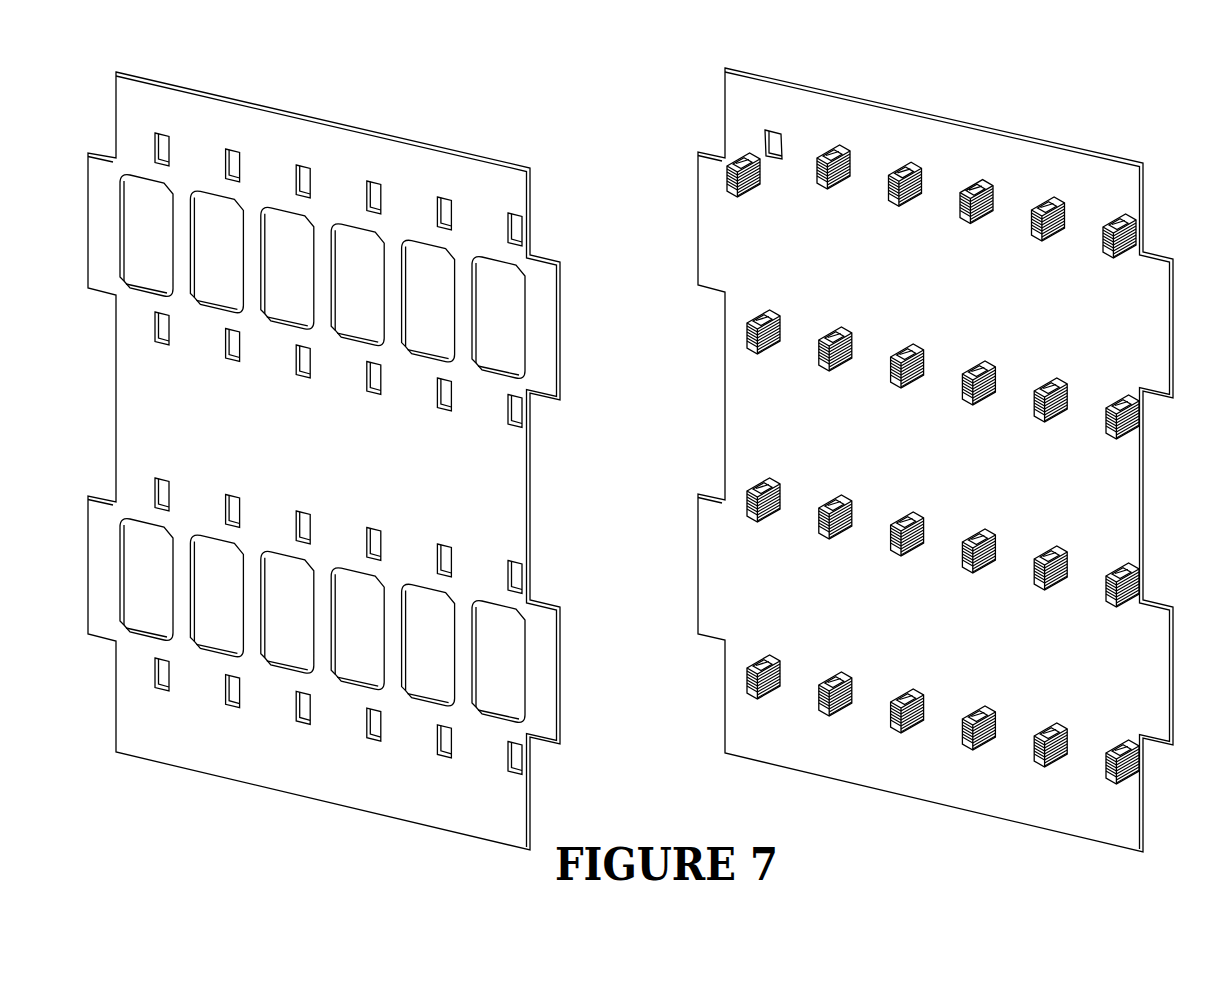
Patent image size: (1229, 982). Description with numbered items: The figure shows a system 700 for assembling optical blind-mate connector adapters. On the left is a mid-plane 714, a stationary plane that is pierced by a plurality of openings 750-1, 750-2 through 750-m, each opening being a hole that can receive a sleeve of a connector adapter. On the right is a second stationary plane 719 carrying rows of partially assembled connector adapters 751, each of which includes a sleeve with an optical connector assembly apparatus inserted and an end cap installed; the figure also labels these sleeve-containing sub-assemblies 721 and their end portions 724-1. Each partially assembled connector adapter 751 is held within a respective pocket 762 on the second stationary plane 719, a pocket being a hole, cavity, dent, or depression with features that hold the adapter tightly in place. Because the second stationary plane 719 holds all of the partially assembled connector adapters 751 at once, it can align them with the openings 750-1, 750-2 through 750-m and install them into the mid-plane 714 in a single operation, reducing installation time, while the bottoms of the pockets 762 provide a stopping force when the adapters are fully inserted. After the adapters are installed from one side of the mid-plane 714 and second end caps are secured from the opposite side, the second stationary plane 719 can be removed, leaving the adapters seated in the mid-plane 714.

The system 700 is at (1102, 92).
The mid-plane 714 is at (490, 492).
The second stationary plane 719 is at (1100, 492).
The sub-assembly 721 is at (893, 176).
The connector latch 724-1 is at (1114, 220).
The opening 750-1 is at (163, 135).
The opening 750-2 is at (230, 155).
The opening 750-m is at (522, 226).
The partially assembled connector adapter 751 is at (722, 169).
The pocket 762 is at (782, 148).